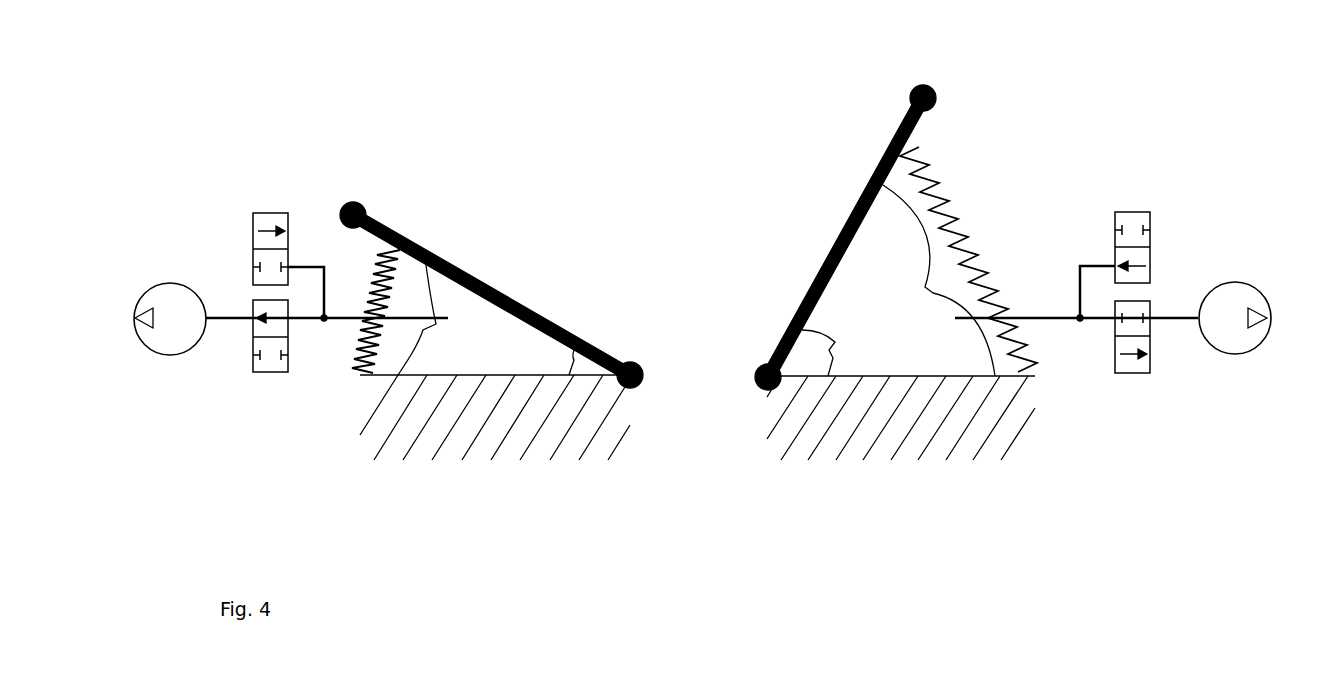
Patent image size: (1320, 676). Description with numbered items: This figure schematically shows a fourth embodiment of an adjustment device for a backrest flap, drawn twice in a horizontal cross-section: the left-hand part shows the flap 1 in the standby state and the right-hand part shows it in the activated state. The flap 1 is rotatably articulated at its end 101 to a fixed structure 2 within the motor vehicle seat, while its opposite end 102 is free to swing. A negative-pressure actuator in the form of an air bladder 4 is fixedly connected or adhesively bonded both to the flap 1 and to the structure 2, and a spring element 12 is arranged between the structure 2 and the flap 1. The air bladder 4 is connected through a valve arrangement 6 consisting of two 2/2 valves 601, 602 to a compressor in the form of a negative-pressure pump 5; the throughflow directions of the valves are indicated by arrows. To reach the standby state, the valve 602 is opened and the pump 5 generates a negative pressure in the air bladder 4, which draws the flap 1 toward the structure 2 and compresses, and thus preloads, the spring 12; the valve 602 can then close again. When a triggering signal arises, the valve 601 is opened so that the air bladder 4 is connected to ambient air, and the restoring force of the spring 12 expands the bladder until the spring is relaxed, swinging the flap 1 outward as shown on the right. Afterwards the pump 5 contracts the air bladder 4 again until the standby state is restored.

The flap 1 is at (667, 212).
The structure 2 is at (535, 457).
The air bladder 4 is at (512, 327).
The negative-pressure pump 5 is at (142, 290).
The valve arrangement 6 is at (698, 253).
The spring element 12 is at (353, 363).
The end of the flap 101 is at (633, 355).
The opposite end of the flap 102 is at (357, 203).
The valve 601 is at (253, 222).
The valve 602 is at (253, 372).